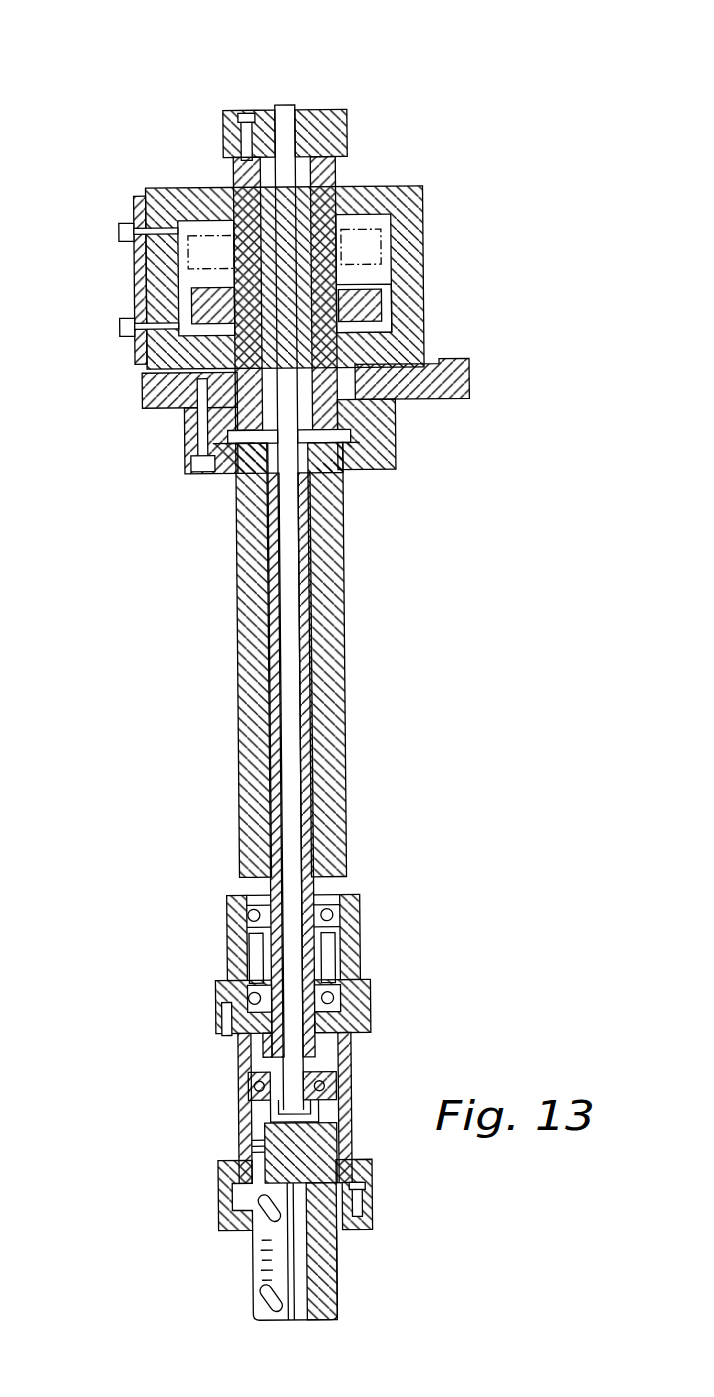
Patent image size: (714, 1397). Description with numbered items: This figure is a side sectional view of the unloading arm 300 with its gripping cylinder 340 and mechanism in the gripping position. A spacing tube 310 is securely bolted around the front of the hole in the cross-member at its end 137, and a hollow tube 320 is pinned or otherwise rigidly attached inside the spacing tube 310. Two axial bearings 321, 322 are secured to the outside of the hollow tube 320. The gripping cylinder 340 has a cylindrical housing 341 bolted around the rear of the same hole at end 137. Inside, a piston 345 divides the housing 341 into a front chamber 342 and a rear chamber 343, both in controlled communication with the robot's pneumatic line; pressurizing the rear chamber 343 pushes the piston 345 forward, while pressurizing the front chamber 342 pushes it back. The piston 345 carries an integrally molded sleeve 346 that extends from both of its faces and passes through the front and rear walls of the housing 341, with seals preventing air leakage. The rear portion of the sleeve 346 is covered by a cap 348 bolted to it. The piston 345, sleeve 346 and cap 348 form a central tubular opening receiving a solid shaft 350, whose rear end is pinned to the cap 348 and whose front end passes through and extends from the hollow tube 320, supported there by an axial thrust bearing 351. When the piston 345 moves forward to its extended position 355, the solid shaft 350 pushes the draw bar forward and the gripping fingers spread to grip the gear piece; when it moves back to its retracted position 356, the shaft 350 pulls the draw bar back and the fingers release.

The unloading arm 300 is at (175, 106).
The spacing tube 310 is at (246, 553).
The hollow tube 320 is at (271, 652).
The axial bearing 321 is at (251, 913).
The axial bearing 322 is at (251, 990).
The gripping cylinder 340 is at (427, 195).
The cylindrical housing 341 is at (421, 205).
The front chamber 342 is at (381, 328).
The rear chamber 343 is at (379, 237).
The piston 345 is at (374, 307).
The sleeve 346 is at (346, 277).
The cap 348 is at (381, 90).
The solid shaft 350 is at (288, 109).
The axial thrust bearing 351 is at (248, 1088).
The extended position 355 is at (197, 294).
The retracted position 356 is at (186, 257).
The end 137 is at (140, 390).